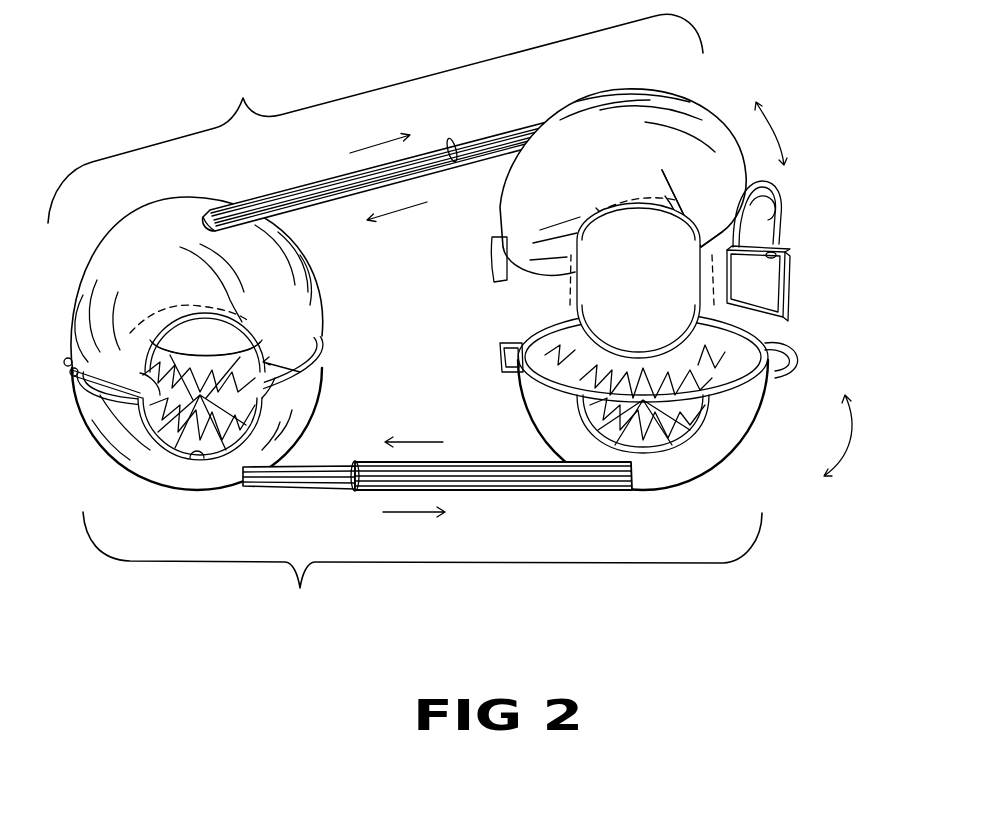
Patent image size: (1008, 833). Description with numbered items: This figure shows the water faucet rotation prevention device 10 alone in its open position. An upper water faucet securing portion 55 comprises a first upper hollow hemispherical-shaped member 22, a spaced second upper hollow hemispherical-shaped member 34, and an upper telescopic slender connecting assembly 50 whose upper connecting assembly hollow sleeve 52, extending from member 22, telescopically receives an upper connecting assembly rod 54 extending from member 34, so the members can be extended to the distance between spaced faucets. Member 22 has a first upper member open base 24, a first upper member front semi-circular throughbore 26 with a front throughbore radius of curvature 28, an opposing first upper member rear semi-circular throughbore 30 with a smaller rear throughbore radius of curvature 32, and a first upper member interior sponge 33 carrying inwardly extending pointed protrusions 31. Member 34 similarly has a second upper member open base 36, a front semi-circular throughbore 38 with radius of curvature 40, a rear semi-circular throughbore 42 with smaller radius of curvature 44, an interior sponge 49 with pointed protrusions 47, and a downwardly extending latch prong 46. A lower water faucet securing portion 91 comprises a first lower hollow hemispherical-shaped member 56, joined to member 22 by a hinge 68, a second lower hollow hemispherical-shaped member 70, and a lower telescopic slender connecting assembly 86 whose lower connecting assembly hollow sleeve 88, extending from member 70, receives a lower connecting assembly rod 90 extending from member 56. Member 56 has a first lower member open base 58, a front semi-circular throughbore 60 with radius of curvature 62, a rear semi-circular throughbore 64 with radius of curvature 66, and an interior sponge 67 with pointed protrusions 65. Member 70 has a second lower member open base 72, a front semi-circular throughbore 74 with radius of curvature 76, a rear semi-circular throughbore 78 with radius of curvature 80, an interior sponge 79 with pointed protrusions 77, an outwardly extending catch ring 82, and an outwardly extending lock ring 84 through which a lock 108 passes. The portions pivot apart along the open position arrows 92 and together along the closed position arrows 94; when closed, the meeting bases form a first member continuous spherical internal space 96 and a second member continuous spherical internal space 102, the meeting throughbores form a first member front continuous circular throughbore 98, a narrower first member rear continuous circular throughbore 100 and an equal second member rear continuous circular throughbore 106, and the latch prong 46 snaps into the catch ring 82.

The water faucet rotation prevention device 10 is at (279, 173).
The first upper hollow, open base, hemispherical-shaped member 22 is at (203, 363).
The first upper member open base 24 is at (318, 313).
The first upper member front semi-circular-shaped throughbore 26 is at (206, 370).
The first upper member front throughbore radius of curvature 28 is at (249, 323).
The first upper member rear semi-circular-shaped throughbore 30 is at (166, 299).
The first upper member rear throughbore radius of curvature 32 is at (141, 302).
The first upper member interior sponge inwardly extending pointed protrusions 31 is at (148, 367).
The first upper member interior sponge 33 is at (143, 376).
The second upper hollow, open base, hemispherical-shaped member 34 is at (576, 88).
The second upper member open base 36 is at (593, 177).
The second upper member front semi-circular-shaped throughbore 38 is at (734, 211).
The second upper member front throughbore radius of curvature 40 is at (718, 232).
The second upper member rear semi-circular-shaped throughbore 42 is at (602, 193).
The second upper member rear throughbore radius of curvature 44 is at (603, 208).
The second upper member downwardly extending latch prong 46 is at (492, 250).
The second upper member interior sponge inwardly extending pointed protrusions 47 is at (698, 245).
The second upper member interior sponge 49 is at (671, 200).
The upper telescopic, cylindrically-shaped, slender connecting assembly 50 is at (384, 166).
The upper connecting assembly hollow sleeve 52 is at (246, 204).
The upper connecting assembly rod 54 is at (468, 141).
The upper water faucet securing portion 55 is at (375, 118).
The first lower hollow, open base, hemispherical-shaped member 56 is at (220, 395).
The first lower member open base 58 is at (326, 365).
The first lower member front semi-circular-shaped throughbore 60 is at (200, 464).
The first lower member front throughbore radius of curvature 62 is at (194, 461).
The first lower member rear semi-circular-shaped throughbore 64 is at (180, 274).
The first lower member rear throughbore radius of curvature 66 is at (185, 249).
The first lower hollow member interior sponge inwardly extending pointed protrusions 65 is at (176, 394).
The first lower member interior sponge 67 is at (278, 416).
The hinge 68 is at (61, 386).
The second lower hollow, open base, hemispherical-shaped member 70 is at (629, 415).
The second lower member open base 72 is at (742, 410).
The second lower member front semi-circular-shaped throughbore 74 is at (687, 435).
The second lower member front throughbore radius of curvature 76 is at (712, 443).
The second lower member interior sponge inwardly extending pointed protrusions 77 is at (632, 412).
The second lower member rear semi-circular-shaped throughbore 78 is at (642, 280).
The second lower member rear throughbore radius of curvature 80 is at (678, 338).
The second lower member interior sponge 79 is at (674, 442).
The second lower member outwardly extending catch ring 82 is at (501, 362).
The second lower member outwardly extending lock ring 84 is at (796, 357).
The lower telescopic, cylindrically-shaped, slender connecting assembly 86 is at (437, 490).
The lower connecting assembly hollow sleeve 88 is at (566, 492).
The lower connecting assembly rod 90 is at (330, 489).
The lower water faucet securing portion 91 is at (422, 568).
The water faucet rotation prevention device open position arrows 92 is at (807, 289).
The water faucet rotation prevention device closed position arrows 94 is at (794, 167).
The first member continuous spherical internal space 96 is at (280, 382).
The first member front continuous circular throughbore 98 is at (219, 439).
The first member rear continuous circular throughbore 100 is at (194, 325).
The second member continuous spherical internal space 102 is at (565, 327).
The second member rear continuous circular throughbore 106 is at (620, 314).
The lock 108 is at (776, 276).